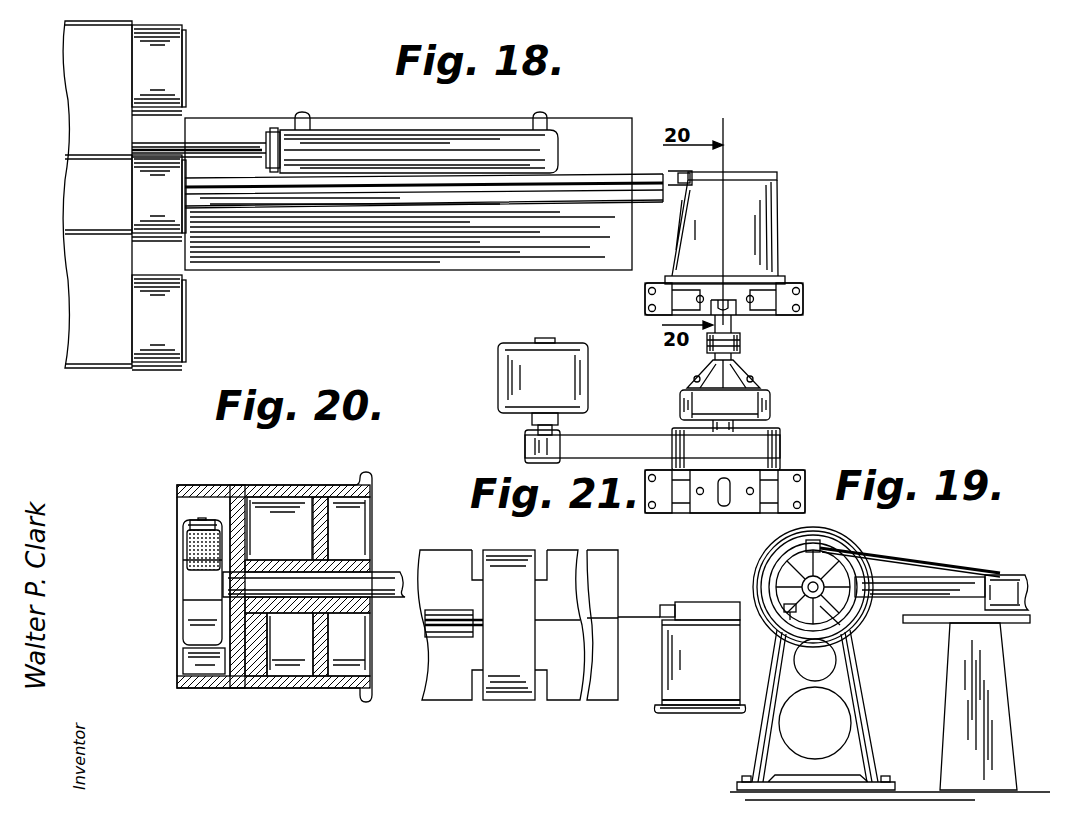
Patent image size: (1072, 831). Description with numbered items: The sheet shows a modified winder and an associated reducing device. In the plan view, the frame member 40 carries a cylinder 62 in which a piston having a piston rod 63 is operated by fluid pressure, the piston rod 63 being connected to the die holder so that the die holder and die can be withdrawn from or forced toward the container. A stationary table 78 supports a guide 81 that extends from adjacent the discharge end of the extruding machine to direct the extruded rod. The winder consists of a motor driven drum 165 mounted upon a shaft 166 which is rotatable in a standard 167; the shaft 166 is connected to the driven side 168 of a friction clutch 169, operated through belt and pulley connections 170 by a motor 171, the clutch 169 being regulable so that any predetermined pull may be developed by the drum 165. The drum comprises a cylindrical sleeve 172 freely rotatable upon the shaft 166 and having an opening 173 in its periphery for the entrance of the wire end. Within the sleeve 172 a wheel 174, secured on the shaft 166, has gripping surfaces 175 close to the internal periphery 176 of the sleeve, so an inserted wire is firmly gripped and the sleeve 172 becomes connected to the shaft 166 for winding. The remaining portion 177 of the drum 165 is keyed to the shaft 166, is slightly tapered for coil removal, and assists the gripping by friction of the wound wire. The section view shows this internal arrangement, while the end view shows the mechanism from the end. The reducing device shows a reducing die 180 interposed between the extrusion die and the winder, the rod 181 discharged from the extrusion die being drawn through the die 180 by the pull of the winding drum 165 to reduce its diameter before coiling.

In FIG. 18, the frame member 40 is at (121, 362).
In FIG. 18, the cylinder 62 is at (343, 143).
In FIG. 19, the cylinder 62 is at (1012, 585).
In FIG. 18, the piston rod 63 is at (221, 150).
In FIG. 18, the stationary table 78 is at (426, 262).
In FIG. 21, the stationary table 78 is at (444, 560).
In FIG. 19, the stationary table 78 is at (935, 623).
In FIG. 18, the guide 81 is at (326, 198).
In FIG. 18, the drum 165 is at (760, 215).
In FIG. 19, the drum 165 is at (831, 545).
In FIG. 18, the shaft 166 is at (740, 320).
In FIG. 20, the shaft 166 is at (385, 575).
In FIG. 19, the shaft 166 is at (805, 585).
In FIG. 18, the standard 167 is at (798, 296).
In FIG. 18, the driven side of friction clutch 168 is at (757, 373).
In FIG. 18, the friction clutch 169 is at (770, 400).
In FIG. 18, the belt and pulley connections 170 is at (641, 446).
In FIG. 18, the motor 171 is at (512, 390).
In FIG. 20, the cylindrical sleeve 172 is at (246, 670).
In FIG. 21, the cylindrical sleeve 172 is at (718, 606).
In FIG. 18, the opening 173 is at (682, 177).
In FIG. 21, the opening 173 is at (667, 605).
In FIG. 19, the opening 173 is at (836, 555).
In FIG. 20, the wheel 174 is at (196, 593).
In FIG. 19, the wheel 174 is at (845, 625).
In FIG. 20, the gripping surfaces 175 is at (187, 550).
In FIG. 19, the gripping surfaces 175 is at (858, 600).
In FIG. 20, the internal periphery 176 is at (190, 666).
In FIG. 20, the remaining portion of drum 177 is at (300, 490).
In FIG. 21, the remaining portion of drum 177 is at (668, 688).
In FIG. 21, the reducing die 180 is at (527, 575).
In FIG. 21, the rod 181 is at (425, 626).